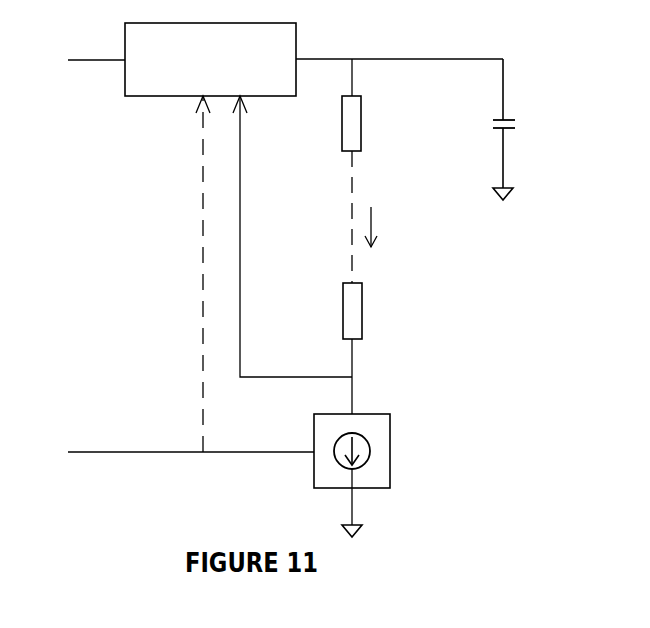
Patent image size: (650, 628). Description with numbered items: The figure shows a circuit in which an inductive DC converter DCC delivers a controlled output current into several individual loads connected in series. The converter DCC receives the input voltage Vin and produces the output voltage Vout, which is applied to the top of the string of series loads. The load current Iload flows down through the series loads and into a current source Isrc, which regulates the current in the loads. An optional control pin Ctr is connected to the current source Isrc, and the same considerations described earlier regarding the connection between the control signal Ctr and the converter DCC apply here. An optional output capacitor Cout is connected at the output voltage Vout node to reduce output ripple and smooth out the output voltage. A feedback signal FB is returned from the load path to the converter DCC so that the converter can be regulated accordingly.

The inductive DC converter DCC is at (210, 74).
The input voltage Vin is at (96, 48).
The output voltage Vout is at (399, 47).
The load current Iload is at (395, 226).
The output capacitor Cout is at (529, 129).
The feedback signal FB is at (292, 236).
The control signal Ctr is at (191, 274).
The current source Isrc is at (373, 475).